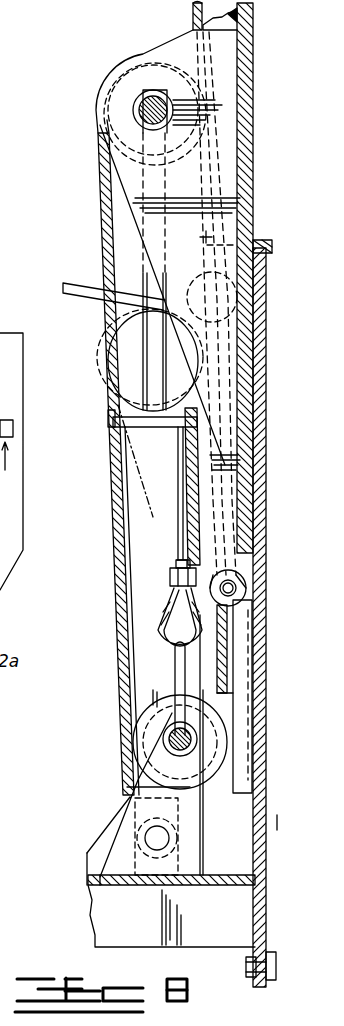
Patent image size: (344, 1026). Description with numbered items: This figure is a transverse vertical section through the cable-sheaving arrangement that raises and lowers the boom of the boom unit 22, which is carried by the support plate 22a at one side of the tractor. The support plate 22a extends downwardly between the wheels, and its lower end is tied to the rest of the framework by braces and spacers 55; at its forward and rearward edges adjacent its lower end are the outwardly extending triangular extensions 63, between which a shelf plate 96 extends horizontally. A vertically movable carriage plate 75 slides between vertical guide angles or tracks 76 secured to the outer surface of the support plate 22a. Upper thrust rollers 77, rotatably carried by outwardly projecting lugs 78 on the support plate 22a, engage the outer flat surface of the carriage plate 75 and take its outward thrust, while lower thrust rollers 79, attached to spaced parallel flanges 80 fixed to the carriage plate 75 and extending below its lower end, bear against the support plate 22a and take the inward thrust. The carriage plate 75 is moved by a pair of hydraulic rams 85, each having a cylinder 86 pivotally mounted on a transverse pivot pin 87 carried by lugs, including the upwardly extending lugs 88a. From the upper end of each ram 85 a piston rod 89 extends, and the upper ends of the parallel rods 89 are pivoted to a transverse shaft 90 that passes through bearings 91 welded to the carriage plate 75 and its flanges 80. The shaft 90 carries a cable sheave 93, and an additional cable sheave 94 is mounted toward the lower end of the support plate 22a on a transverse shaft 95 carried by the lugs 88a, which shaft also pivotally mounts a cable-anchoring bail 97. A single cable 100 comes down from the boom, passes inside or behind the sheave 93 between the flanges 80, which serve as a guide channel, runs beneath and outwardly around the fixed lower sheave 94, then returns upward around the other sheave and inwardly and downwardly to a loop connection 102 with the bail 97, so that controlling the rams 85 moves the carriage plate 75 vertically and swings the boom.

The boom unit 22 is at (97, 340).
The support plate 22a is at (255, 903).
The braces and spacers 55 is at (268, 985).
The triangular extensions 63 is at (110, 830).
The carriage plate 75 is at (237, 67).
The guide angles or tracks 76 is at (240, 795).
The upper thrust rollers 77 is at (203, 262).
The lugs 78 is at (200, 237).
The lower thrust rollers 79 is at (208, 597).
The flanges 80 is at (140, 200).
The hydraulic rams 85 is at (158, 462).
The cylinder 86 is at (145, 525).
The pivot pin 87 is at (147, 838).
The lugs 88a is at (203, 857).
The piston rod 89 is at (125, 260).
The transverse shaft 90 is at (140, 110).
The bearings 91 is at (142, 96).
The cable sheave 93 is at (96, 88).
The cable sheave 94 is at (137, 762).
The transverse shaft 95 is at (166, 738).
The shelf plate 96 is at (107, 885).
The cable-anchoring bail 97 is at (174, 678).
The cable 100 is at (193, 15).
The loop connection 102 is at (163, 618).